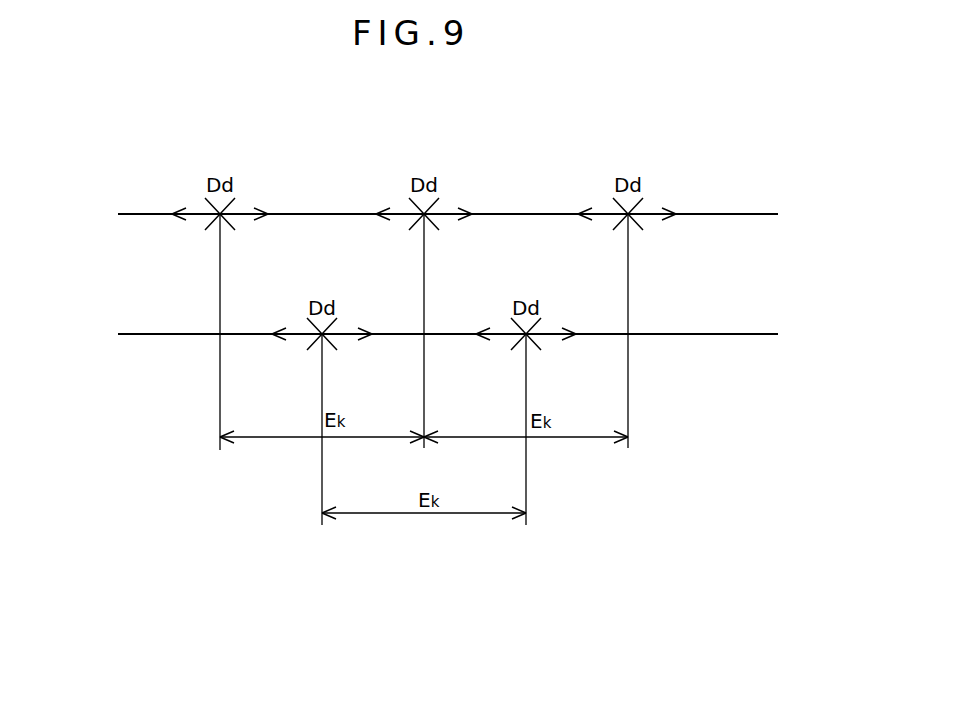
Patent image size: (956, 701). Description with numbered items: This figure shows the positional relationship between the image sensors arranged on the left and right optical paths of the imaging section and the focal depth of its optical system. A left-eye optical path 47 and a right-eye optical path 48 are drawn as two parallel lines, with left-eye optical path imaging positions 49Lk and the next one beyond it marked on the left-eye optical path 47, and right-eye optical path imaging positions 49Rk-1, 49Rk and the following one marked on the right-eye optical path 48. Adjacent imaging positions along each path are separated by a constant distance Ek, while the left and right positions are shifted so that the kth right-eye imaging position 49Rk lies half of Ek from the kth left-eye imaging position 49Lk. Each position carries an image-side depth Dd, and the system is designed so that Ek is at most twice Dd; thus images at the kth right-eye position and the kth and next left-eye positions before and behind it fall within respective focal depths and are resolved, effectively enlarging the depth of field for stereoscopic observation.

The left-eye optical path 47 is at (140, 333).
The right-eye optical path 48 is at (140, 213).
The right-eye optical path imaging position 49Rk-1 is at (221, 217).
The right-eye optical path imaging position 49Rk is at (425, 217).
The left-eye optical path imaging position 49Lk is at (323, 337).